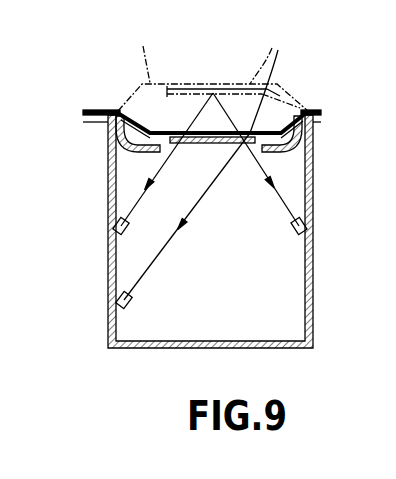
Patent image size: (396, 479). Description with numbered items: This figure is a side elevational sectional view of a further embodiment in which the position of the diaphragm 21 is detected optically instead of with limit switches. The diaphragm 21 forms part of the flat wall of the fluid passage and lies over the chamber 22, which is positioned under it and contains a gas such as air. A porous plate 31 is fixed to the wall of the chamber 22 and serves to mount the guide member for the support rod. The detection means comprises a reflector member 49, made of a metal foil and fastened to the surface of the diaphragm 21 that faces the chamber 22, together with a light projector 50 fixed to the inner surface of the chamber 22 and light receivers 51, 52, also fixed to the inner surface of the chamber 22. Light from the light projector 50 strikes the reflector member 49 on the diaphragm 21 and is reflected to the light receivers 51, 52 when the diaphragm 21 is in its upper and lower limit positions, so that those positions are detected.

The diaphragm 21 is at (140, 112).
The chamber 22 is at (313, 158).
The porous plate 31 is at (132, 150).
The reflector member 49 is at (217, 159).
The light projector 50 is at (308, 222).
The light receiver 51 is at (114, 227).
The light receiver 52 is at (114, 296).